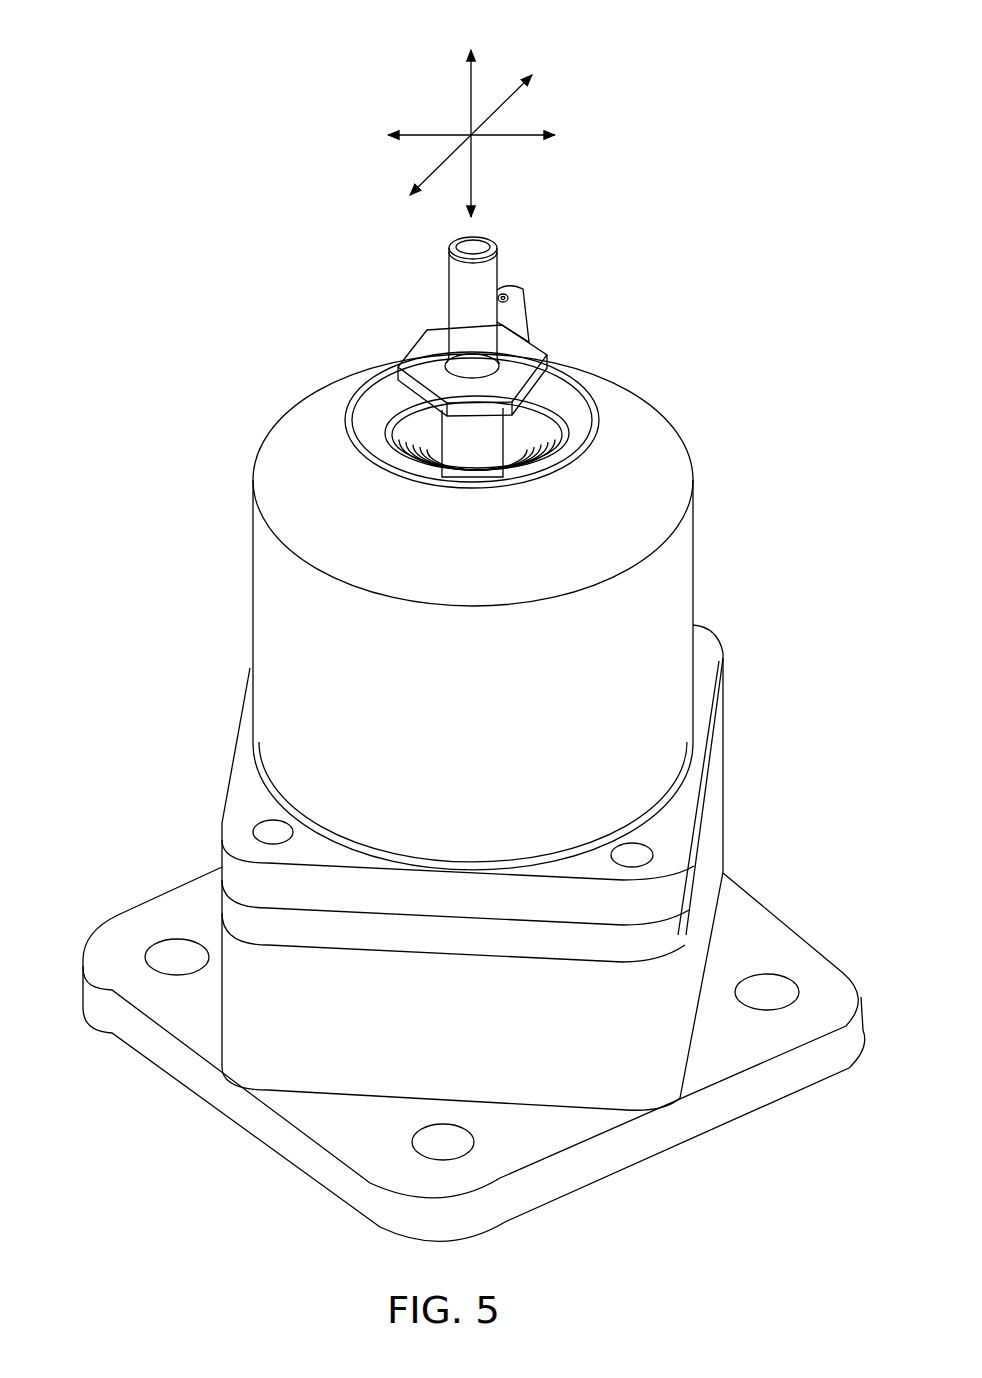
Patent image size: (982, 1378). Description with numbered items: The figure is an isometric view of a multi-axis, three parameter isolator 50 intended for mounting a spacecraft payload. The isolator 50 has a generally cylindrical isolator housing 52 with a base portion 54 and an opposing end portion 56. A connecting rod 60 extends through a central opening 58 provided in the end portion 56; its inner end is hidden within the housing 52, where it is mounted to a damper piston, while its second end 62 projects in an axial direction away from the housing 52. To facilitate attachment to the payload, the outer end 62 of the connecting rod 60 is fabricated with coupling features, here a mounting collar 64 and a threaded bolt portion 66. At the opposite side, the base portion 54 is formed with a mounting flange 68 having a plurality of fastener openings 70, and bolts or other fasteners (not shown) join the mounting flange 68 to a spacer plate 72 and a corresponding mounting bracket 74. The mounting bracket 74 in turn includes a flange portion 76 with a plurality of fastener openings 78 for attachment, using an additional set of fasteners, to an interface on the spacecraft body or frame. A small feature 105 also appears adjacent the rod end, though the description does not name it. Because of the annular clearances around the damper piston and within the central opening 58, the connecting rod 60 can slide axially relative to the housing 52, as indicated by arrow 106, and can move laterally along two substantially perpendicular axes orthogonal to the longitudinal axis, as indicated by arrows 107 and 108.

The multi-axis, three parameter isolator 50 is at (270, 353).
The isolator housing 52 is at (702, 582).
The base portion 54 is at (630, 399).
The end portion 56 is at (683, 745).
The central opening 58 is at (377, 383).
The connecting rod 60 is at (455, 472).
The second end (outer end) of connecting rod 62 is at (481, 470).
The mounting collar 64 is at (527, 344).
The threaded bolt portion 66 is at (451, 291).
The mounting flange 68 is at (235, 775).
The fastener openings 70 is at (257, 825).
The spacer plate 72 is at (222, 905).
The mounting bracket 74 is at (462, 1043).
The flange portion 76 is at (100, 927).
The fastener openings 78 is at (158, 950).
The locking tab 105 is at (515, 289).
The arrow indicating axial movement 106 is at (474, 76).
The arrow indicating lateral movement 107 is at (514, 96).
The arrow indicating lateral movement 108 is at (514, 137).